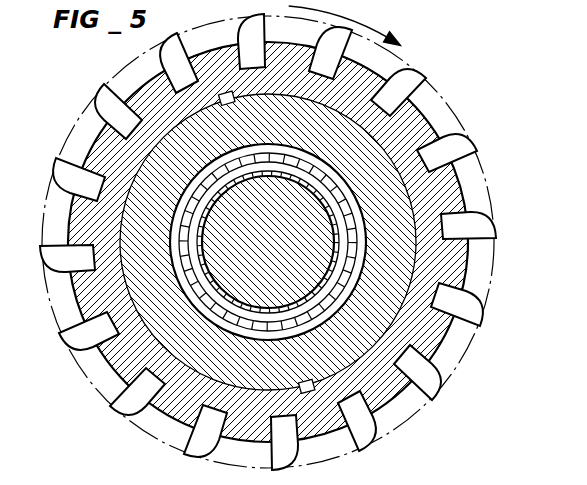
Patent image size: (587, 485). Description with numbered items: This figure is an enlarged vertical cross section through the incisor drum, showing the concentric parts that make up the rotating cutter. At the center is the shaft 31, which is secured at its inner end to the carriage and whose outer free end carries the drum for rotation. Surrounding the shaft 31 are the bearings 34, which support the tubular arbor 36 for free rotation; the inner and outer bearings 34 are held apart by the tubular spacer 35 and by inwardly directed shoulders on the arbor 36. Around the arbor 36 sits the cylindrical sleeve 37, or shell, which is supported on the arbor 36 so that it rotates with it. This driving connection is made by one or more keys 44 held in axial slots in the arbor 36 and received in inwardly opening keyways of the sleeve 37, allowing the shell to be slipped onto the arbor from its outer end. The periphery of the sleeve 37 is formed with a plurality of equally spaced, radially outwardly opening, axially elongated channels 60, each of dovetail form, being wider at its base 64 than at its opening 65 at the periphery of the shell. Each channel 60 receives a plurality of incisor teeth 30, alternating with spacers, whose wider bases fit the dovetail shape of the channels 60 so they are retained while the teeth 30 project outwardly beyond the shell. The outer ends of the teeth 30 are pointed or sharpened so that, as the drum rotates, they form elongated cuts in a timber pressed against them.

The incisor teeth 30 is at (103, 108).
The shaft 31 is at (298, 243).
The bearings 34 is at (178, 282).
The tubular spacer 35 is at (197, 238).
The tubular arbor 36 is at (387, 317).
The cylindrical sleeve 37 is at (447, 268).
The keys 44 is at (293, 286).
The channels 60 is at (474, 160).
The bases of channels 64 is at (457, 145).
The openings of channels 65 is at (480, 233).